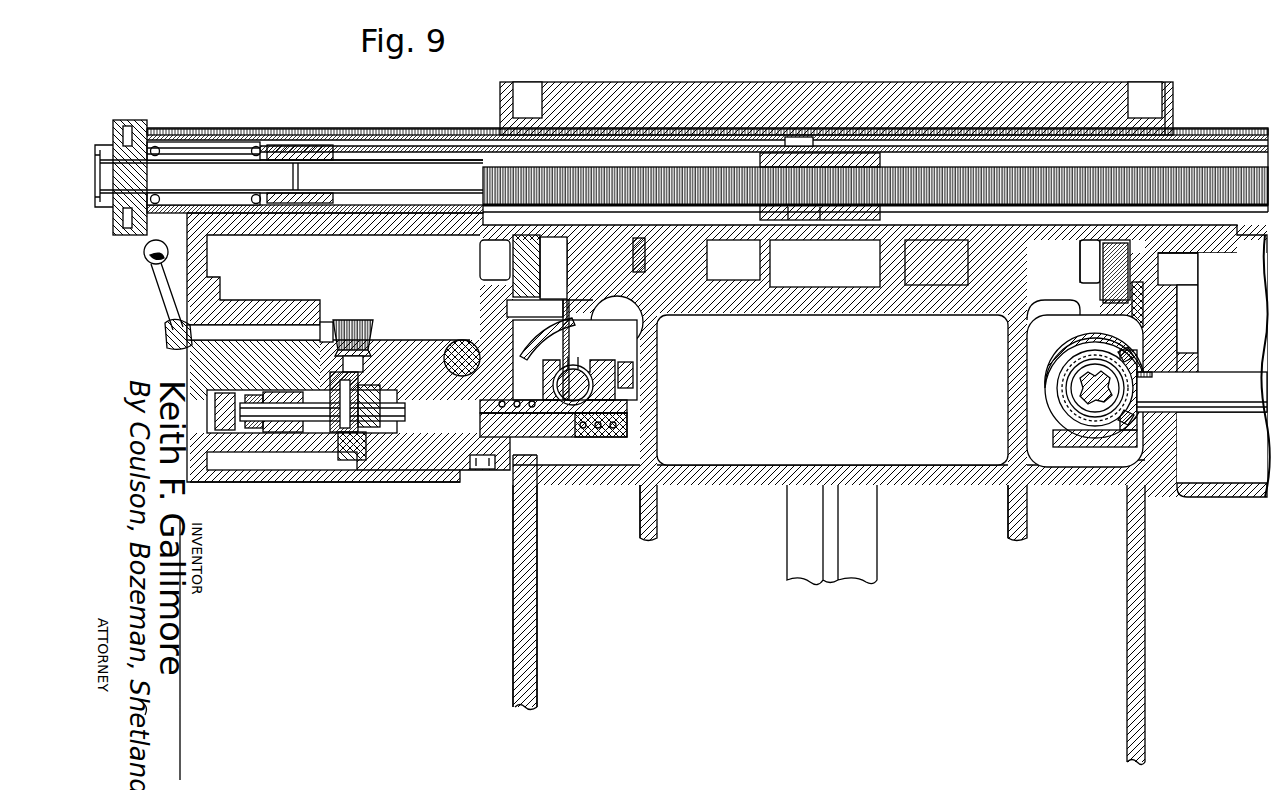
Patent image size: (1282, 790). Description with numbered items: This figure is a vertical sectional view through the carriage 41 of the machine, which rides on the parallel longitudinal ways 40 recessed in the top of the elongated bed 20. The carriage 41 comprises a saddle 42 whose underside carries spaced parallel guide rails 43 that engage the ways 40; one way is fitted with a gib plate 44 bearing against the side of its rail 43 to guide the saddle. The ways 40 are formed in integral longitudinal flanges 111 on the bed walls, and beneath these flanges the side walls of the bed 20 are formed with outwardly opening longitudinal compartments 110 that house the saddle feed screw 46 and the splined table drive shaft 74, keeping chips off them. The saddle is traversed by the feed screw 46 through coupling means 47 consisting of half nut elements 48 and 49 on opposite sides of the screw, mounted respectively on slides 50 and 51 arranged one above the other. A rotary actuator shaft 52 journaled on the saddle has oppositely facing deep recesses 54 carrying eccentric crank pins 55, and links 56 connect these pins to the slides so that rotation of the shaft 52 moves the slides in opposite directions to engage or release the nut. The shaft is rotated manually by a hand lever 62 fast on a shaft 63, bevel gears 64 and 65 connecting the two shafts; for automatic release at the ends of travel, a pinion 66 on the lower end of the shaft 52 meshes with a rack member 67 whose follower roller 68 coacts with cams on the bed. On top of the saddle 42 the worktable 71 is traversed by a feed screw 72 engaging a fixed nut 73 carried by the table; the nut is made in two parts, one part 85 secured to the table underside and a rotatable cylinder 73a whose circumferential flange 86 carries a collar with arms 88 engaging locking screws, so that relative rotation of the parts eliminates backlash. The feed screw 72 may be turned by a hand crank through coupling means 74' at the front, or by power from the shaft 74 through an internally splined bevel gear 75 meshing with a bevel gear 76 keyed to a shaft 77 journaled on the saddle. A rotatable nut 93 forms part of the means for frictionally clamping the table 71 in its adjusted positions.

The bed 20 is at (513, 616).
The longitudinal ways 40 is at (612, 276).
The carriage 41 is at (1179, 118).
The saddle 42 is at (290, 482).
The guide rails 43 is at (580, 278).
The gib plate 44 is at (639, 238).
The feed screw 46 is at (546, 380).
The coupling means 47 is at (575, 362).
The half nut element 48 is at (553, 366).
The half nut element 49 is at (614, 370).
The slide 50 is at (500, 398).
The slide 51 is at (540, 437).
The shaft 52 is at (366, 380).
The recesses 54 is at (412, 392).
The crank pins 55 is at (378, 390).
The links 56 is at (318, 404).
The hand lever 62 is at (152, 291).
The shaft 63 is at (258, 325).
The bevel gear 64 is at (338, 322).
The bevel gear 65 is at (355, 340).
The pinion 66 is at (350, 470).
The rack member 67 is at (412, 470).
The follower roller 68 is at (484, 470).
The worktable 71 is at (762, 82).
The feed screw 72 is at (990, 207).
The nut 73 is at (875, 241).
The cylinder 73a is at (820, 222).
The splined drive shaft 74 is at (1087, 395).
The coupling means 74' is at (121, 166).
The internally splined bevel gear 75 is at (1083, 432).
The bevel gear 76 is at (1123, 432).
The shaft 77 is at (1240, 385).
The nut part 85 is at (888, 221).
The circumferential flange 86 is at (789, 222).
The arms 88 is at (766, 218).
The rotatable nut 93 is at (848, 315).
The compartments 110 is at (636, 446).
The longitudinal flanges 111 is at (867, 381).